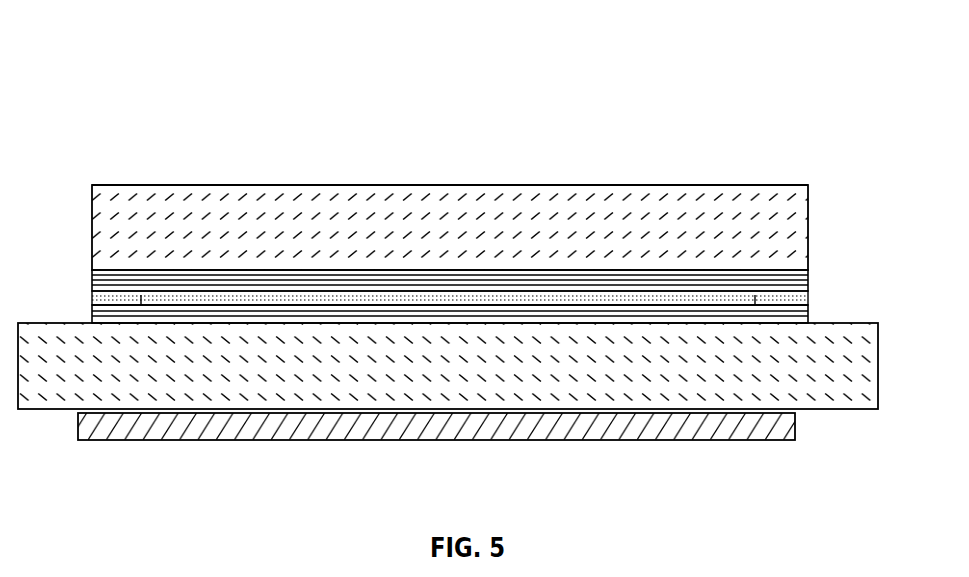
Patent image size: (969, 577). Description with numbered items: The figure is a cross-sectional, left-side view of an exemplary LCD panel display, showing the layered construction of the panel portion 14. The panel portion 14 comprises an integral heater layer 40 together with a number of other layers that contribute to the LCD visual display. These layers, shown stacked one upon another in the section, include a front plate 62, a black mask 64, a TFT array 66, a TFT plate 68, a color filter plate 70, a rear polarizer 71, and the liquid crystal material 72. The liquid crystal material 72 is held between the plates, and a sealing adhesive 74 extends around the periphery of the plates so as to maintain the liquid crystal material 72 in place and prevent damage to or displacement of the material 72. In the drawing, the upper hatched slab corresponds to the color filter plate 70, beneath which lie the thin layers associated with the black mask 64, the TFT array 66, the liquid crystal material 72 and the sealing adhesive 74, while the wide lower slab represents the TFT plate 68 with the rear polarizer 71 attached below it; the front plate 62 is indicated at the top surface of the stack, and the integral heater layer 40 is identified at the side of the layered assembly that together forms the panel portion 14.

The panel portion 14 is at (178, 113).
The integral heater layer 40 is at (808, 320).
The front plate 62 is at (514, 187).
The black mask 64 is at (808, 274).
The TFT array 66 is at (808, 312).
The TFT plate 68 is at (448, 366).
The color filter plate 70 is at (450, 227).
The rear polarizer 71 is at (620, 428).
The liquid crystal material 72 is at (232, 302).
The sealing adhesive 74 is at (101, 301).